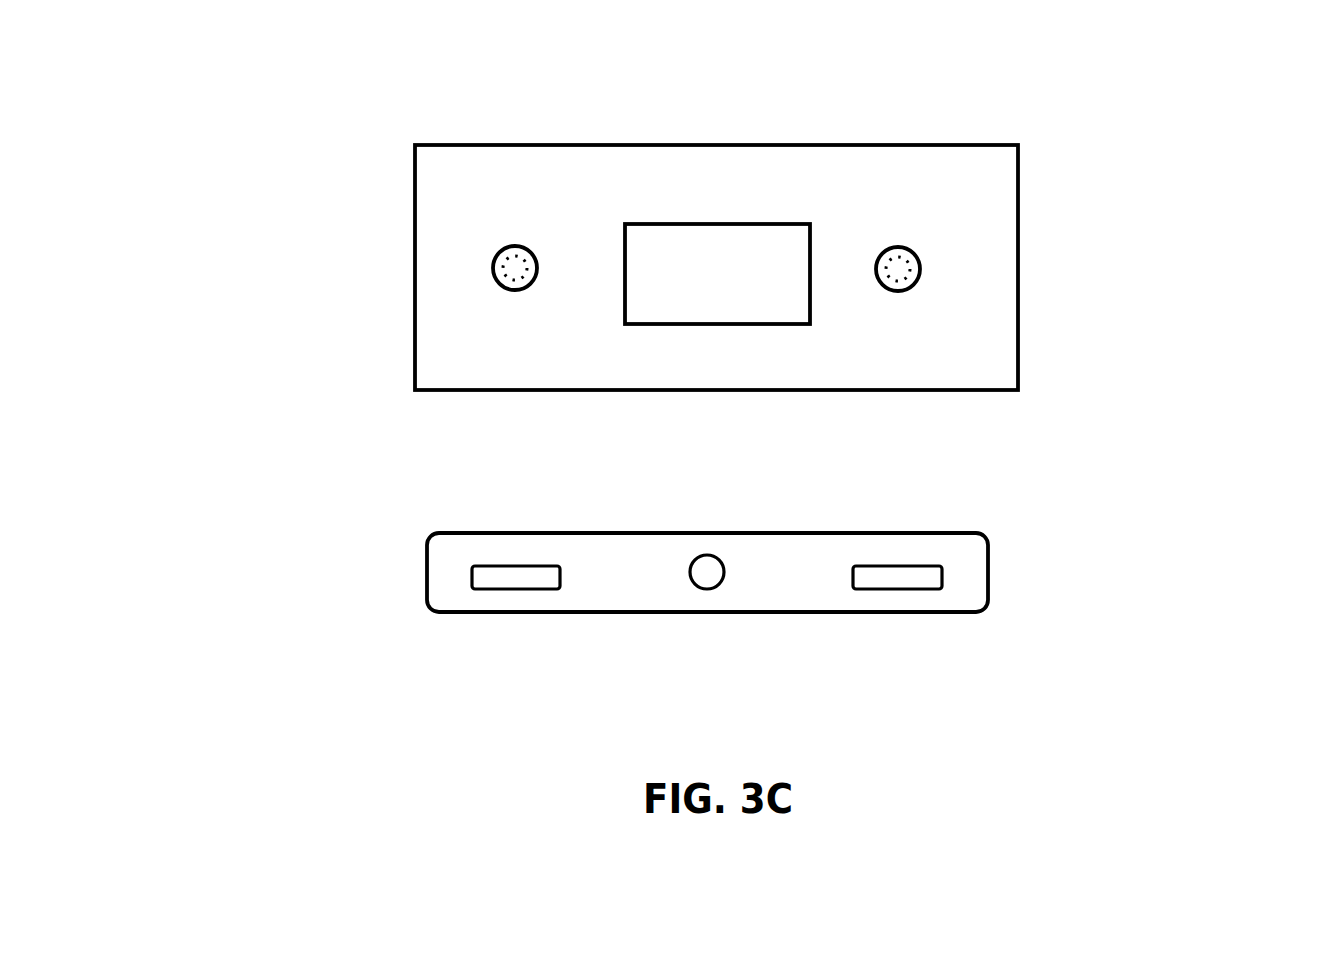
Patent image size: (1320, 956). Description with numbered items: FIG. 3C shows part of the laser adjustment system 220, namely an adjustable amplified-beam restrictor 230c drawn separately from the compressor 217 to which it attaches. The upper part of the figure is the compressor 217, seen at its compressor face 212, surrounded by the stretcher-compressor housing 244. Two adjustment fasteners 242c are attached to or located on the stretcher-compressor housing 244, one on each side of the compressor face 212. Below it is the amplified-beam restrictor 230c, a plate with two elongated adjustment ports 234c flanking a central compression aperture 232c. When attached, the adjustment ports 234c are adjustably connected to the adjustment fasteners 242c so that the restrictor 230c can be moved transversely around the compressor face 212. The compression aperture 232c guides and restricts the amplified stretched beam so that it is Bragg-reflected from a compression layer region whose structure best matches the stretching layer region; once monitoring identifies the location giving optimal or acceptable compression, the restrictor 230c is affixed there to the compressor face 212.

The compressor 217 is at (608, 176).
The compressor face 212 is at (745, 100).
The stretcher-compressor housing 244 is at (1018, 298).
The adjustment fasteners 242c is at (877, 287).
The adjustable amplified-beam restrictor 230c is at (552, 584).
The adjustment ports 234c is at (895, 566).
The compression aperture 232c is at (707, 590).
The laser adjustment system 220 is at (552, 615).